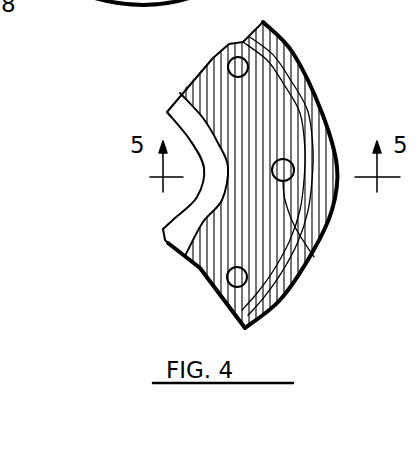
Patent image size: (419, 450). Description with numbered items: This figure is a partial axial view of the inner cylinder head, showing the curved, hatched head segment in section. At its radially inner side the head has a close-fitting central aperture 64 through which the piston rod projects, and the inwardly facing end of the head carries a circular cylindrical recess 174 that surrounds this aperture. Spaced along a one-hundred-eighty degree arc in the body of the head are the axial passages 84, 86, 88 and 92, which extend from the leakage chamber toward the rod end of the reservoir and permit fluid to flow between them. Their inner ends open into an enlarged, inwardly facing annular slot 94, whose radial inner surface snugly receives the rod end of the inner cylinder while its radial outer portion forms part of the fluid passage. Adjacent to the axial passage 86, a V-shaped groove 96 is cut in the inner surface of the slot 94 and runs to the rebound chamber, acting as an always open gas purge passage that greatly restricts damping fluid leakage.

The central aperture 64 is at (160, 224).
The axial passage 84 is at (238, 67).
The axial passage 86 is at (280, 143).
The axial passage 88 is at (237, 277).
The axial passage 92 is at (159, 27).
The annular slot 94 is at (302, 204).
The V-shaped groove 96 is at (314, 257).
The circular cylindrical recess 174 is at (165, 238).